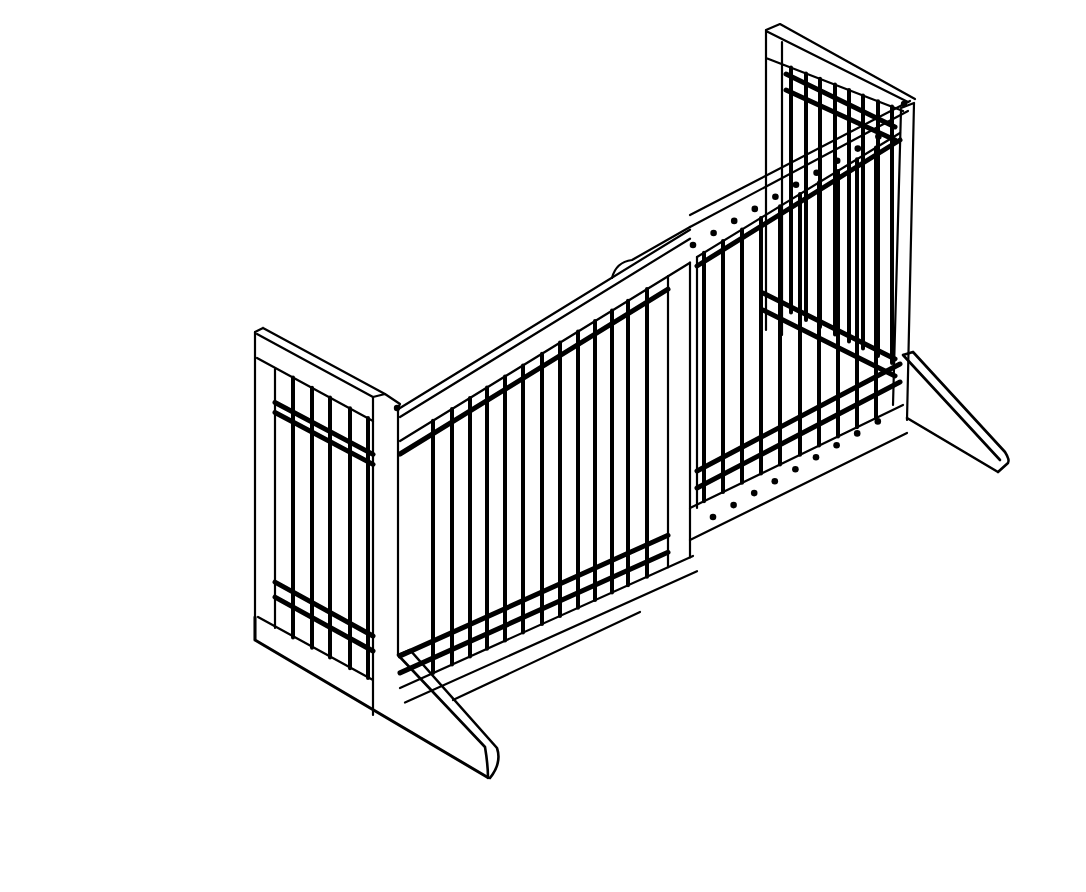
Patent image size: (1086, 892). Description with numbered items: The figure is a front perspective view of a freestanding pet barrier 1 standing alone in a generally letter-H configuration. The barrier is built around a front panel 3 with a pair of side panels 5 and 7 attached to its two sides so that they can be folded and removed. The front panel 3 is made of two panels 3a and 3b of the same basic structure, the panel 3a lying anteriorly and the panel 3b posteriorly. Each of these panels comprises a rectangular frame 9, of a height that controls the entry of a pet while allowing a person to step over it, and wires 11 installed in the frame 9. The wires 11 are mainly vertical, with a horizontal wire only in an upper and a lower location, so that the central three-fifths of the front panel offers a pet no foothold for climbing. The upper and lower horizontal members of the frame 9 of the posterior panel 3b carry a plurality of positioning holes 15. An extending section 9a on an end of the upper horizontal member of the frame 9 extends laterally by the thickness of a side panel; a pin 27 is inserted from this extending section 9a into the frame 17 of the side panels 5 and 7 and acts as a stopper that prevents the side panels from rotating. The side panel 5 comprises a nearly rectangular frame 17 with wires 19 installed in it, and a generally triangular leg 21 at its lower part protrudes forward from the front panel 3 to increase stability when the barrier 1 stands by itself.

The freestanding pet barrier 1 is at (983, 262).
The front panel 3 is at (610, 228).
The panel 3a is at (510, 338).
The panel 3b is at (707, 210).
The side panel 5 is at (230, 484).
The side panel 7 is at (848, 52).
The rectangular frame 9 is at (470, 358).
The extending section 9a is at (373, 400).
The wires 11 is at (582, 510).
The positioning holes 15 is at (693, 243).
The frame 17 is at (268, 577).
The wires 19 is at (312, 445).
The leg 21 is at (497, 720).
The pin 27 is at (397, 405).